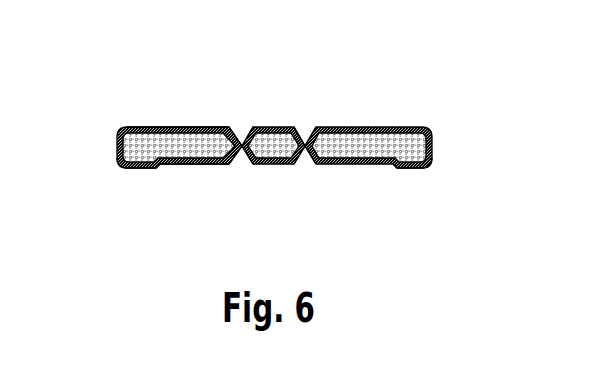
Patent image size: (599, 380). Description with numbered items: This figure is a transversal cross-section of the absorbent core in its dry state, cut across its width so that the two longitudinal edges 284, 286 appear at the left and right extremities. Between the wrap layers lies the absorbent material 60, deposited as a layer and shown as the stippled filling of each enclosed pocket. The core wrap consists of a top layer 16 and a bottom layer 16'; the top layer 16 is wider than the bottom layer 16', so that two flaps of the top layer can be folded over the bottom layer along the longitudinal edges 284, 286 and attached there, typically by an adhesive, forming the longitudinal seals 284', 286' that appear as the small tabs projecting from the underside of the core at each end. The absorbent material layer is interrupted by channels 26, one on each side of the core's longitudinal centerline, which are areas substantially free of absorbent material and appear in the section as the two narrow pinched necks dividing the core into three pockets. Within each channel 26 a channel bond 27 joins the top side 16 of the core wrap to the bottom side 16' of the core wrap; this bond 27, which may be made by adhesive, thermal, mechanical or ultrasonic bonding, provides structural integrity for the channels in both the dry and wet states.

The longitudinal edge 284 is at (148, 111).
The longitudinal seal 284' is at (100, 184).
The longitudinal edge 286 is at (397, 115).
The longitudinal seal 286' is at (450, 183).
The top layer of the core wrap 16 is at (181, 87).
The bottom layer of the core wrap 16' is at (293, 182).
The absorbent material 60 is at (176, 160).
The channel bond 27 is at (305, 128).
The channel 26 is at (296, 166).